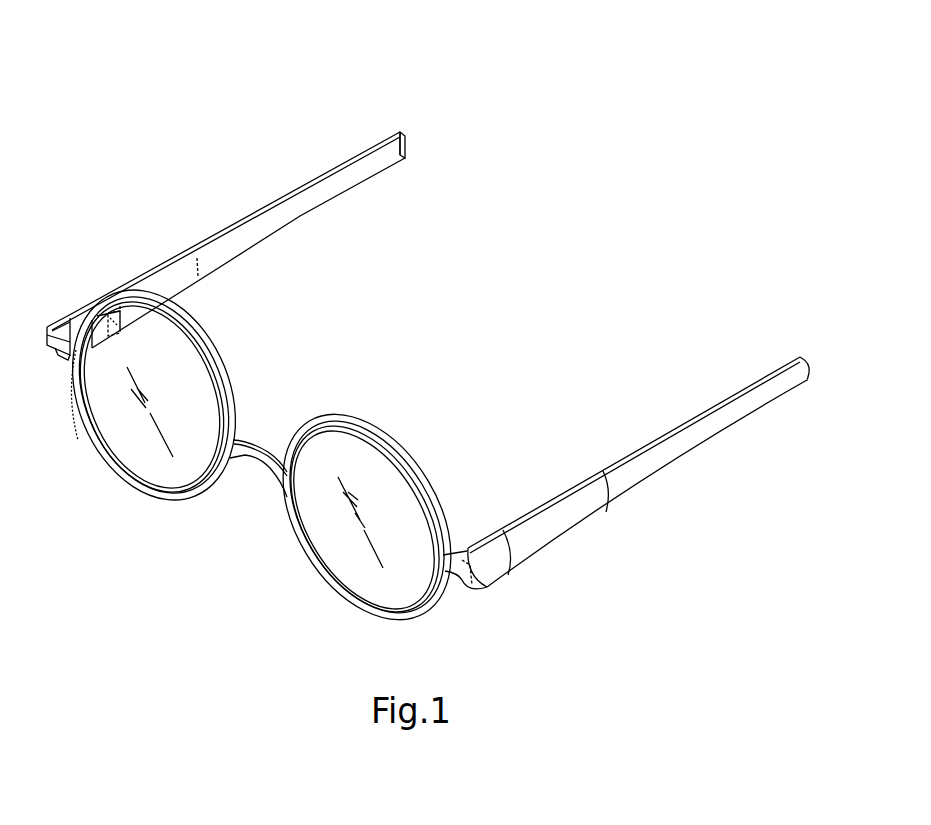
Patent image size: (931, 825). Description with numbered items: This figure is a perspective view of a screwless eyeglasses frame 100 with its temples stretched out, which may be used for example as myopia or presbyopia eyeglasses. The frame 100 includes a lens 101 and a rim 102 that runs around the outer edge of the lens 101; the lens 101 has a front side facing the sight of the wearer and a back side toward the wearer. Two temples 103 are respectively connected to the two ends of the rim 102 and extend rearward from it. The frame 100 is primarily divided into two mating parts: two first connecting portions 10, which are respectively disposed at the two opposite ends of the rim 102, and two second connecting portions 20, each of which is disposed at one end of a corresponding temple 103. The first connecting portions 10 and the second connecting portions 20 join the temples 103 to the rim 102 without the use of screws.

The screwless eyeglasses frame 100 is at (215, 115).
The first connecting portion 10 is at (68, 307).
The second connecting portion 20 is at (148, 267).
The lens 101 is at (173, 381).
The rim 102 is at (213, 378).
The temple 103 is at (393, 153).